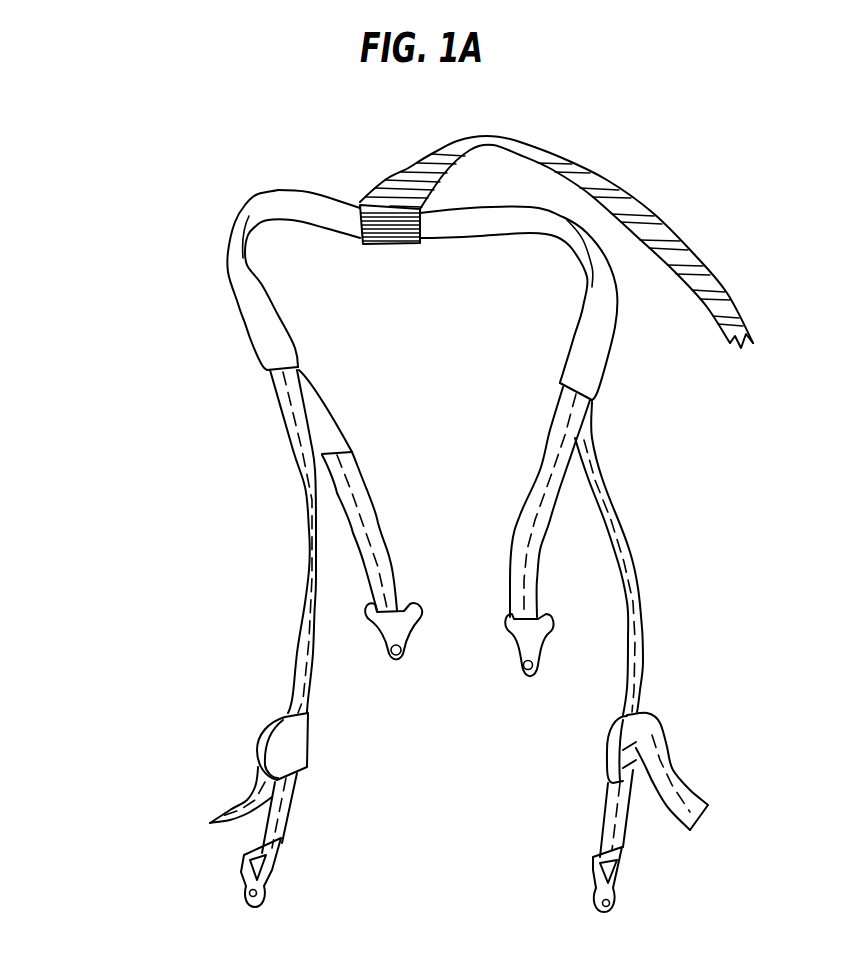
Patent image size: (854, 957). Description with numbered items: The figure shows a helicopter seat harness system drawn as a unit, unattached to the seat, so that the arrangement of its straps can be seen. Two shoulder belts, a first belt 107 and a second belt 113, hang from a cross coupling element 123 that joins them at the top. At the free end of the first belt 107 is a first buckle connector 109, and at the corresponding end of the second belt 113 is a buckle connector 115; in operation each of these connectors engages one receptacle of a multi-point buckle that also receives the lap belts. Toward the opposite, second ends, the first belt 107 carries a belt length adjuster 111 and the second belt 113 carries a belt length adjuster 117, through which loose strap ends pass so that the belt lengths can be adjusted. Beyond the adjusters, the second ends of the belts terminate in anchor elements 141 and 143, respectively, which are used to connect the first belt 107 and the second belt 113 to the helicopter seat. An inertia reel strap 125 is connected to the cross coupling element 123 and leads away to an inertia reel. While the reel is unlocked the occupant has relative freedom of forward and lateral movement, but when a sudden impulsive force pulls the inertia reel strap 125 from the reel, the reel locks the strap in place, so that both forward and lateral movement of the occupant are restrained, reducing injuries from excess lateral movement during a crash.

The first belt 107 is at (390, 551).
The first buckle connector 109 is at (408, 638).
The belt length adjuster 111 is at (607, 757).
The second belt 113 is at (543, 563).
The buckle connector 115 is at (538, 665).
The belt length adjuster 117 is at (300, 747).
The cross coupling element 123 is at (480, 240).
The inertia reel strap 125 is at (560, 153).
The anchor element 141 is at (617, 901).
The anchor element 143 is at (271, 890).